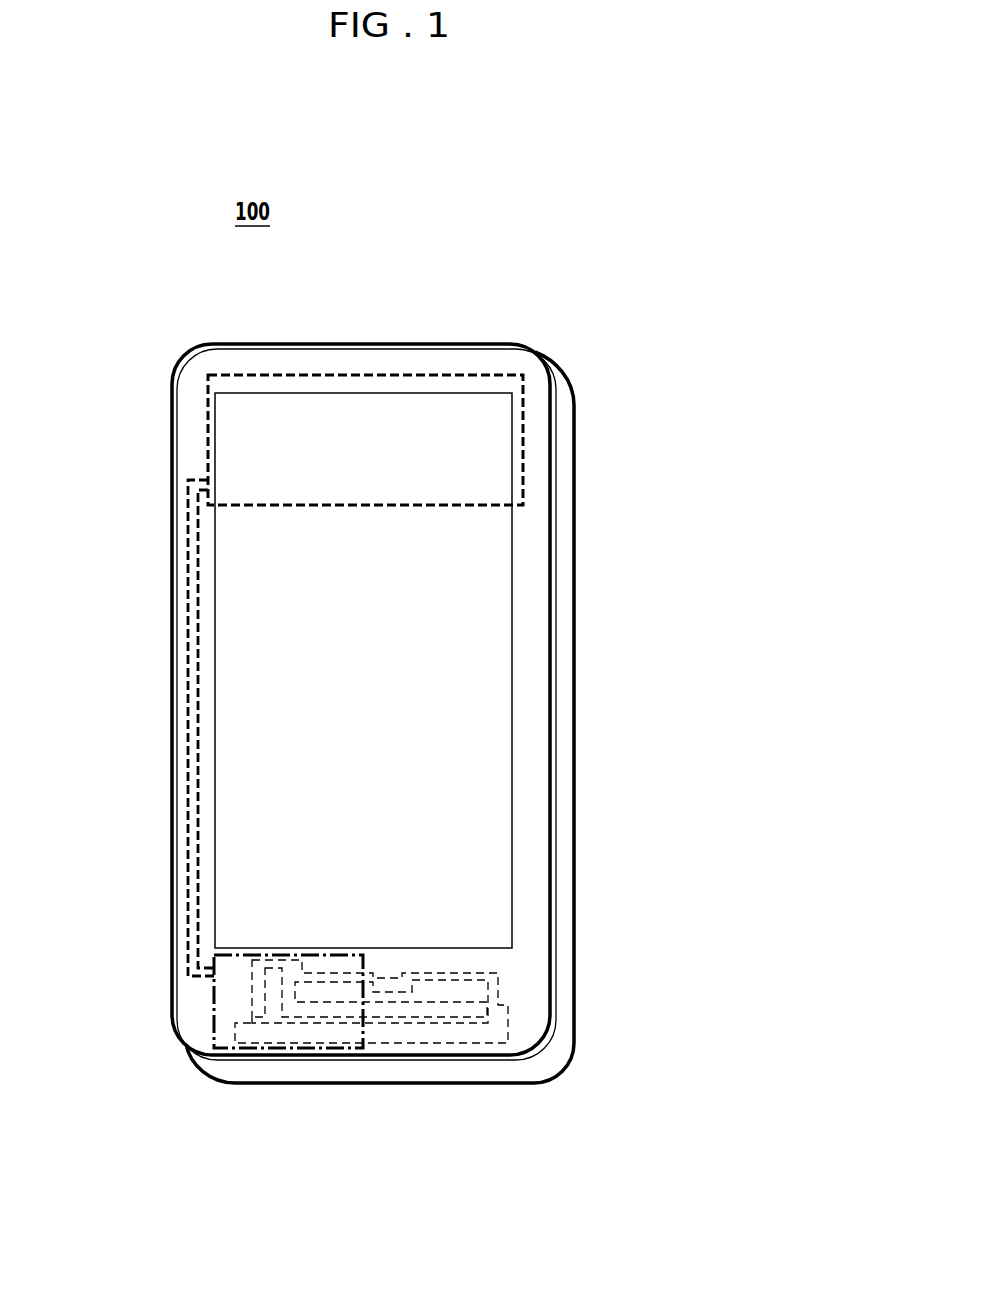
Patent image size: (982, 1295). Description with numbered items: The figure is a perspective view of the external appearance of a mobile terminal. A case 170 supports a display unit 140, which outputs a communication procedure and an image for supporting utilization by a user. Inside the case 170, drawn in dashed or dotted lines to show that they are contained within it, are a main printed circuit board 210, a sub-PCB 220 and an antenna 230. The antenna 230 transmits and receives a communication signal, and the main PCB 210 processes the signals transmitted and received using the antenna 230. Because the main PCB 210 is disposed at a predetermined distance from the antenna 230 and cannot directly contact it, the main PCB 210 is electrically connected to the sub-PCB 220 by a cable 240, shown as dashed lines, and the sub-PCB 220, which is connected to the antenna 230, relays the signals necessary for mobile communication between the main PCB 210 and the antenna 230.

The display unit 140 is at (463, 648).
The case 170 is at (565, 757).
The main printed circuit board (PCB) 210 is at (443, 375).
The sub-PCB 220 is at (213, 1015).
The antenna 230 is at (460, 1043).
The cable 240 is at (187, 702).